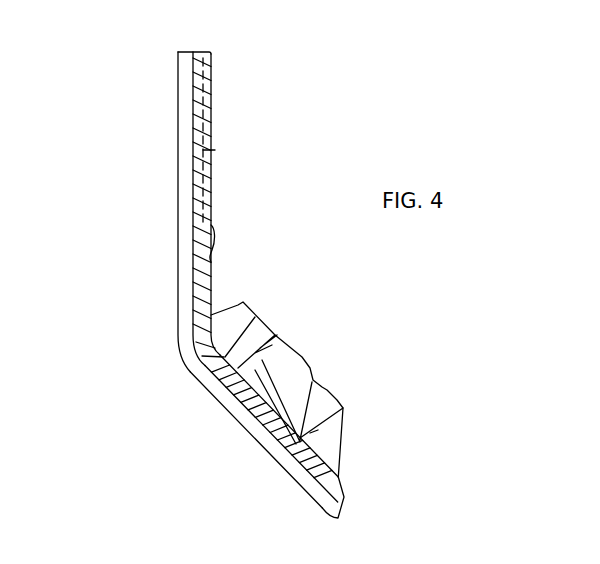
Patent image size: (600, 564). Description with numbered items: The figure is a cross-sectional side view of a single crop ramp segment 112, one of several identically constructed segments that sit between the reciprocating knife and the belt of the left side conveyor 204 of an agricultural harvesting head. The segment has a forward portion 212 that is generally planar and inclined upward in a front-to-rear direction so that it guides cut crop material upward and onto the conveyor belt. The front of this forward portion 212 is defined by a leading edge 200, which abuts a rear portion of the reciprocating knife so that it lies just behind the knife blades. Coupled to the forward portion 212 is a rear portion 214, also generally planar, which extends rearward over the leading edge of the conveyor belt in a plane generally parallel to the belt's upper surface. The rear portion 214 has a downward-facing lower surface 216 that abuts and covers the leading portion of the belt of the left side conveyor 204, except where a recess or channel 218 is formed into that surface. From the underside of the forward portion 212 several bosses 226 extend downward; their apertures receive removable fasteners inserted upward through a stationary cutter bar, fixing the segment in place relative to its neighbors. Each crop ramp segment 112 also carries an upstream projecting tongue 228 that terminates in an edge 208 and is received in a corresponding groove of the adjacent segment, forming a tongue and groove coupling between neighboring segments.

The crop ramp segment 112 is at (137, 386).
The leading edge 200 is at (343, 512).
The left side conveyor 204 is at (183, 52).
The edge 208 is at (178, 326).
The forward portion 212 is at (239, 467).
The rear portion 214 is at (131, 220).
The lower surface 216 is at (212, 75).
The recess or channel 218 is at (220, 152).
The bosses 226 is at (246, 308).
The upstream projecting tongue 228 is at (186, 288).